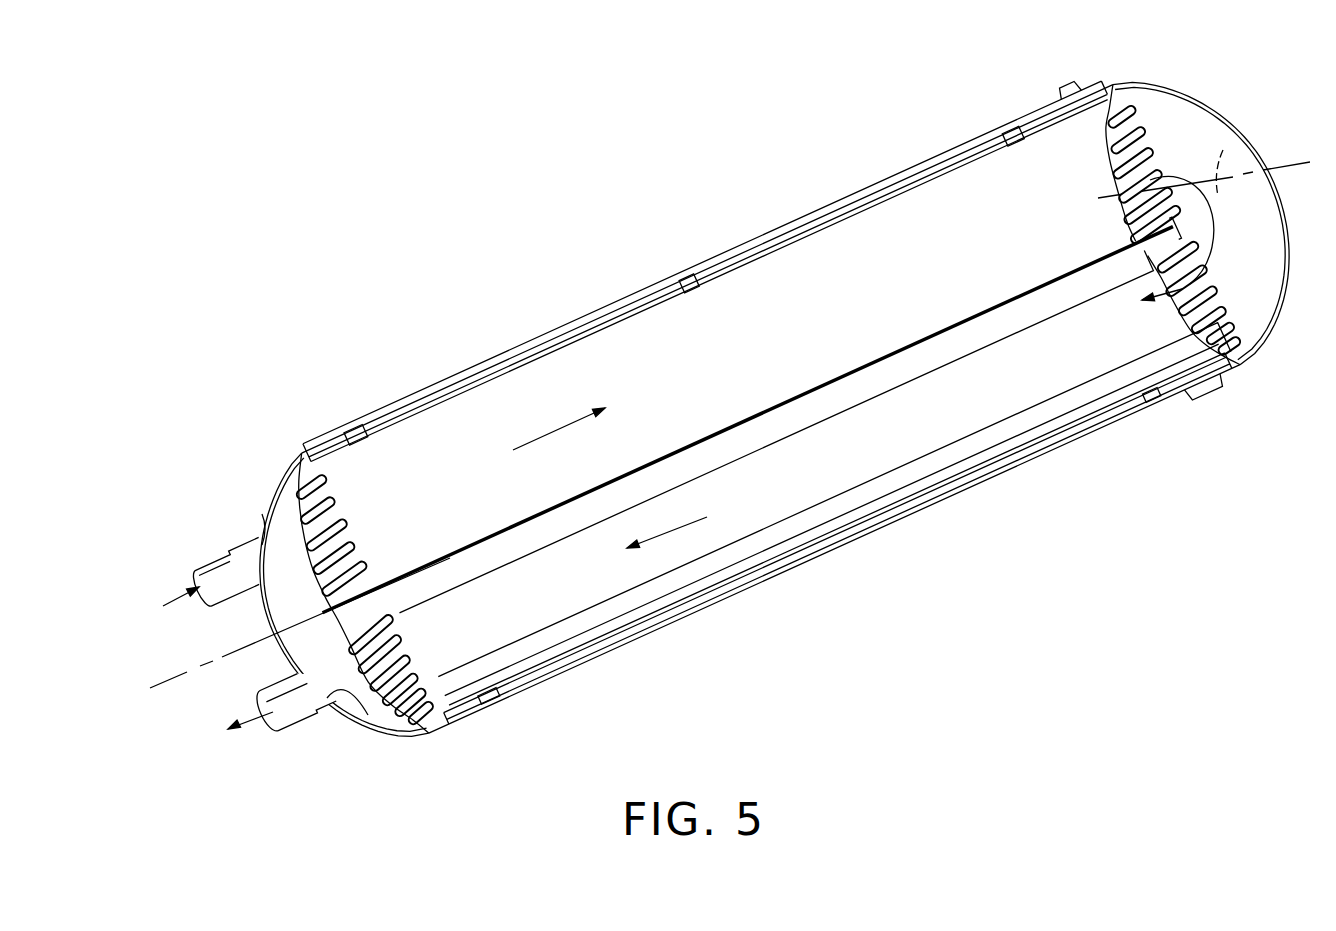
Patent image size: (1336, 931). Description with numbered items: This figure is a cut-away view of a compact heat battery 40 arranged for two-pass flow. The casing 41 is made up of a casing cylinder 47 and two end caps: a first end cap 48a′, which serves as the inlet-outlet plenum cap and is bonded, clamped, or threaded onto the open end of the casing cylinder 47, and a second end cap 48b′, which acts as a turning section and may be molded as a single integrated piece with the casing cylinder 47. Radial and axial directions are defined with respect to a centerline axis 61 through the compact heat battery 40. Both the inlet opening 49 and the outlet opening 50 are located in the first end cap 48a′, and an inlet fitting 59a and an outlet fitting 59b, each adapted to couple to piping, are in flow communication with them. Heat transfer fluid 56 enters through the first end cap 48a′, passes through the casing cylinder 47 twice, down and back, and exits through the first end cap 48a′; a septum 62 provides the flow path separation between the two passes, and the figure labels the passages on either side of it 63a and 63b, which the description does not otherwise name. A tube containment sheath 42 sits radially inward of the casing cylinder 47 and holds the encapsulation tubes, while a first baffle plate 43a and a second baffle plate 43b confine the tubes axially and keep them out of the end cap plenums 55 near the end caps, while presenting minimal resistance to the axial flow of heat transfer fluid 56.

The compact heat battery 40 is at (730, 425).
The casing 41 is at (837, 539).
The tube containment sheath 42 is at (842, 278).
The first baffle plate 43a is at (357, 593).
The second baffle plate 43b is at (1171, 222).
The casing cylinder 47 is at (704, 266).
The first end cap 48a′ is at (297, 604).
The second end cap 48b′ is at (1224, 198).
The inlet opening 49 is at (267, 514).
The outlet opening 50 is at (381, 722).
The end cap plenum 55 is at (306, 601).
The heat transfer fluid 56 is at (172, 604).
The inlet fitting 59a is at (213, 563).
The outlet fitting 59b is at (312, 731).
The centerline axis 61 is at (1223, 150).
The septum 62 is at (771, 432).
The upper passage 63a is at (742, 369).
The lower passage 63b is at (793, 499).